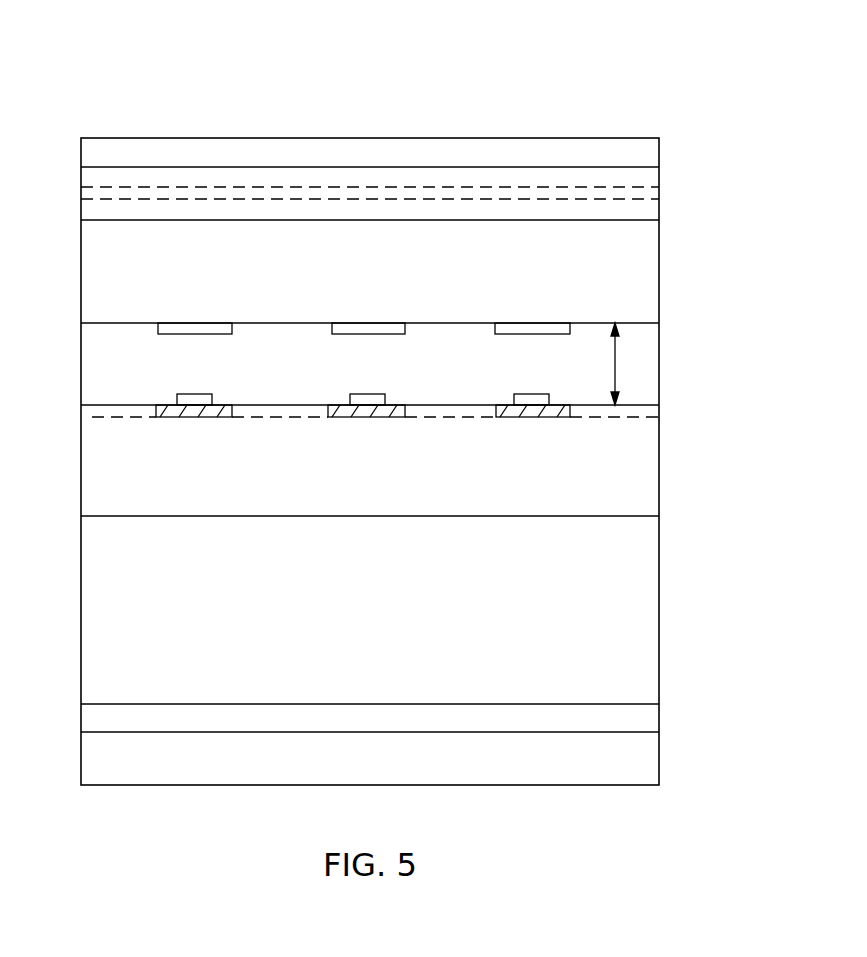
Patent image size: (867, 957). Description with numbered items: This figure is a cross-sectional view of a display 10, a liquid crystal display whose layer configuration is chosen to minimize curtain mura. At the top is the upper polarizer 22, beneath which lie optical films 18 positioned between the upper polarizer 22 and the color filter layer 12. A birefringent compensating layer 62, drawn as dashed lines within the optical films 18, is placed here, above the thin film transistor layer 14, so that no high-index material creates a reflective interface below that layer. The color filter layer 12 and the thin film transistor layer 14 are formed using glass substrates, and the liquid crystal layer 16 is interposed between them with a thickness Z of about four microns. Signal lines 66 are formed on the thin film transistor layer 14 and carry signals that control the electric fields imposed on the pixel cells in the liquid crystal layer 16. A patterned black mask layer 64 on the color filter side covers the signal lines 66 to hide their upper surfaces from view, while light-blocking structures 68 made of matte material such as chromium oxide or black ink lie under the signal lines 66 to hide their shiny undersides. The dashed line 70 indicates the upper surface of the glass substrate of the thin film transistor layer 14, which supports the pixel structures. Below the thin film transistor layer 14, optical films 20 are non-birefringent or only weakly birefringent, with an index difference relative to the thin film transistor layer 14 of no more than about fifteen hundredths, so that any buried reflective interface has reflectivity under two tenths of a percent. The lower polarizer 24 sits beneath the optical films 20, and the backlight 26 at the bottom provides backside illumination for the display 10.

The display 10 is at (135, 38).
The upper polarizer 22 is at (655, 152).
The optical films 18 is at (77, 168).
The compensating layer 62 is at (655, 193).
The color filter layer 12 is at (655, 264).
The liquid crystal layer 16 is at (655, 360).
The patterned black mask layer 64 is at (191, 336).
The signal lines 66 is at (195, 393).
The light-blocking structures 68 is at (192, 410).
The dashed line 70 is at (95, 420).
The thin-film-transistor layer 14 is at (655, 455).
The optical films 20 is at (675, 517).
The lower polarizer 24 is at (90, 716).
The backlight 26 is at (90, 756).